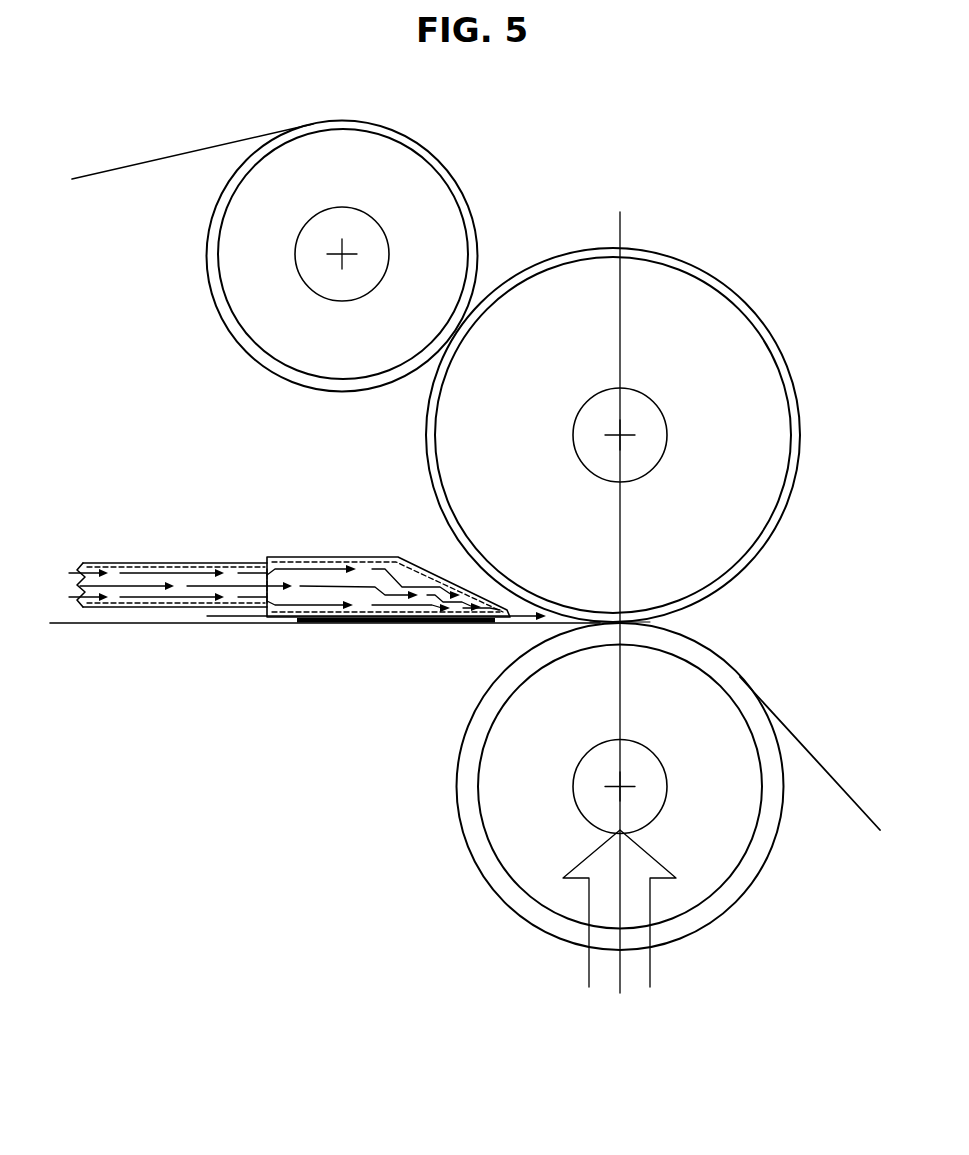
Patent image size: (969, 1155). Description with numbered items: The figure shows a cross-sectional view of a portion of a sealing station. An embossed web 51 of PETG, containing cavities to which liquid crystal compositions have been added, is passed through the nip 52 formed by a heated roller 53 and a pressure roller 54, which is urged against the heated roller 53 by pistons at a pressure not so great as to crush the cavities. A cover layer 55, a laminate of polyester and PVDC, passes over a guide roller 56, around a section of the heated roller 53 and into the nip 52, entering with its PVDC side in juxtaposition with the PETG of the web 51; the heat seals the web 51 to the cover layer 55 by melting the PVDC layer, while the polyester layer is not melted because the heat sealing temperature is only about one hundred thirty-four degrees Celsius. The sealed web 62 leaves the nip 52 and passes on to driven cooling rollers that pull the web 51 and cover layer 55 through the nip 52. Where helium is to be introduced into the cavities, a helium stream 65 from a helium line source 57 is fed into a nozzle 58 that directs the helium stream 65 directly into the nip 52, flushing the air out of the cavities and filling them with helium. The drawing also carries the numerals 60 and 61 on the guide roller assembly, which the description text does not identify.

The conveyor belt 51 is at (188, 626).
The nip 52 is at (660, 620).
The upper roller 53 is at (488, 436).
The lower roller 54 is at (512, 782).
The film 55 is at (127, 168).
The belt roller 56 is at (268, 252).
The extrusion die 57 is at (127, 560).
The die lip 58 is at (355, 555).
The belt 60 is at (447, 163).
The belt roller surface 61 is at (243, 340).
The laminate 62 is at (850, 826).
The extruded melt layer 65 is at (540, 630).